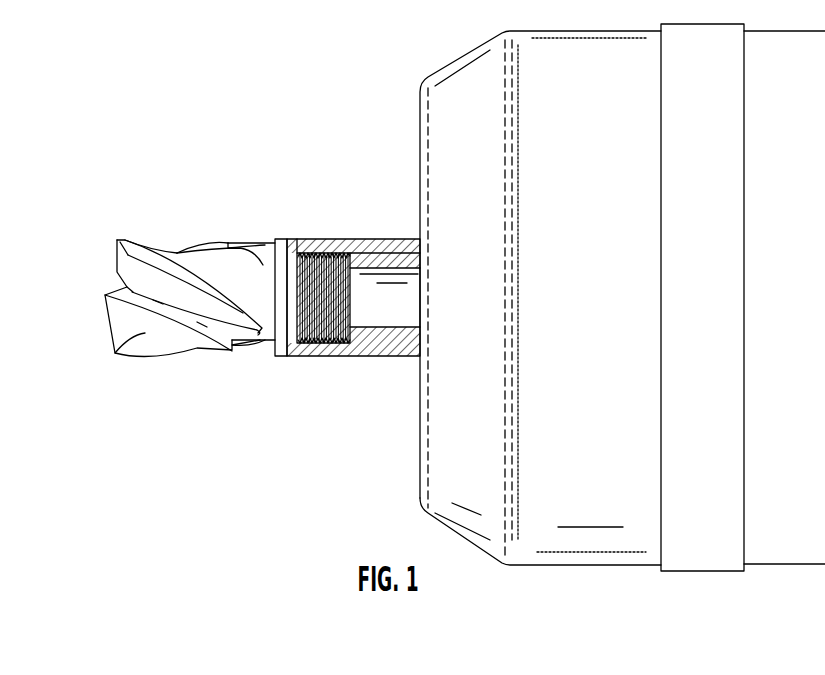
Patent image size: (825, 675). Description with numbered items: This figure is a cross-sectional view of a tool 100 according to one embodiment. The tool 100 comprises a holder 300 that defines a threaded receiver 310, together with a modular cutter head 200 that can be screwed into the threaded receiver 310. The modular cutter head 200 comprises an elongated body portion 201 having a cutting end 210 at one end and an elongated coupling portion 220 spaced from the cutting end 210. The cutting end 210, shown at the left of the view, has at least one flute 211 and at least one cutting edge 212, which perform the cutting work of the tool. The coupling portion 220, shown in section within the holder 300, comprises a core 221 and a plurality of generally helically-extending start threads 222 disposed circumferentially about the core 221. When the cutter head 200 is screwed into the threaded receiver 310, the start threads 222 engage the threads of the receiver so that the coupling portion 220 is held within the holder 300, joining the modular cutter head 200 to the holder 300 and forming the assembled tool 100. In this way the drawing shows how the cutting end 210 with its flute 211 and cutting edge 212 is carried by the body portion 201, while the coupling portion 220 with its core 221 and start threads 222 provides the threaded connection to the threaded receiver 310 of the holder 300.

The tool 100 is at (258, 192).
The modular cutter head 200 is at (188, 354).
The elongated body portion 201 is at (120, 383).
The cutting end 210 is at (250, 338).
The flute 211 is at (112, 258).
The cutting edge 212 is at (176, 254).
The elongated coupling portion 220 is at (352, 301).
The core 221 is at (291, 254).
The start threads 222 is at (323, 253).
The holder 300 is at (383, 357).
The threaded receiver 310 is at (355, 258).